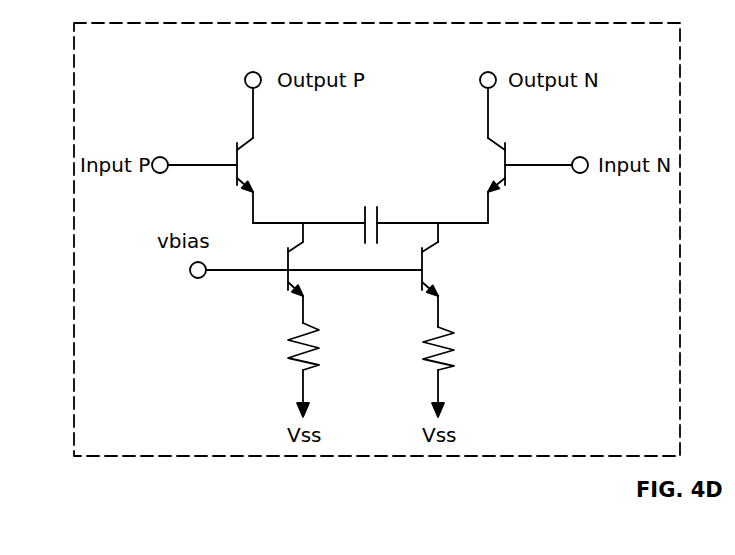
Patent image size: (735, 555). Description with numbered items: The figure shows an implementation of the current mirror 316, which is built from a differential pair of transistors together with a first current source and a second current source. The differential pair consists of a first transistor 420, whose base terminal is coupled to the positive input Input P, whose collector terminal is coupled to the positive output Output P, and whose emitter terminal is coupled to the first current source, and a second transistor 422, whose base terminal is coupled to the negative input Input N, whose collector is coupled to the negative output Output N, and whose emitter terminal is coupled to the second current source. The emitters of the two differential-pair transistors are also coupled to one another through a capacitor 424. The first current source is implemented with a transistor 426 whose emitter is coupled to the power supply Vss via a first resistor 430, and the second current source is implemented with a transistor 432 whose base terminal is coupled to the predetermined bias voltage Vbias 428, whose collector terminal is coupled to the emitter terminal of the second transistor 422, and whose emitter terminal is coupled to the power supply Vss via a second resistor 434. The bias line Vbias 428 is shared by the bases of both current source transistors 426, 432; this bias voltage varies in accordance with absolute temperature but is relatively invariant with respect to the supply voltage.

The current mirror 316 is at (127, 451).
The first transistor 420 is at (243, 147).
The second transistor 422 is at (495, 147).
The capacitor 424 is at (379, 212).
The transistor 426 is at (290, 278).
The predetermined bias voltage 428 is at (190, 272).
The first resistor 430 is at (293, 340).
The transistor 432 is at (422, 282).
The second resistor 434 is at (428, 338).